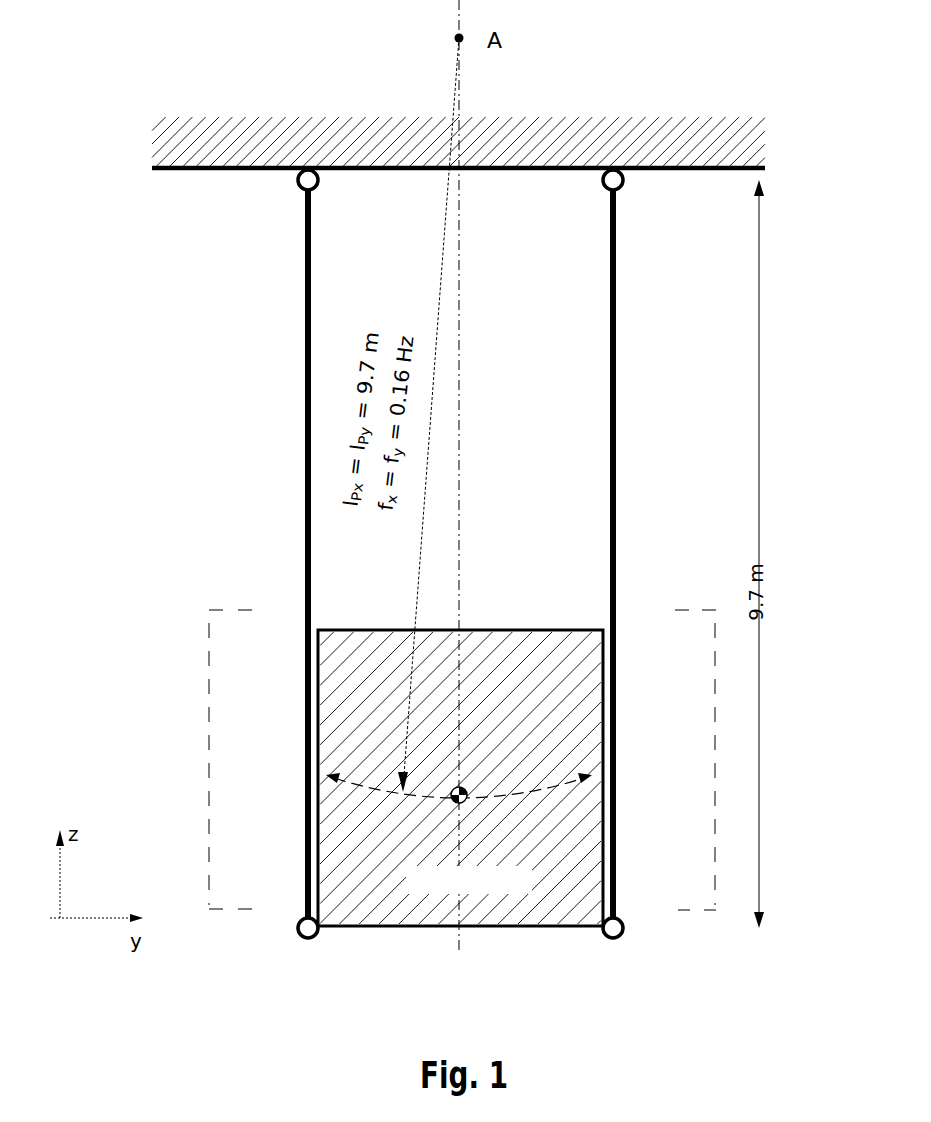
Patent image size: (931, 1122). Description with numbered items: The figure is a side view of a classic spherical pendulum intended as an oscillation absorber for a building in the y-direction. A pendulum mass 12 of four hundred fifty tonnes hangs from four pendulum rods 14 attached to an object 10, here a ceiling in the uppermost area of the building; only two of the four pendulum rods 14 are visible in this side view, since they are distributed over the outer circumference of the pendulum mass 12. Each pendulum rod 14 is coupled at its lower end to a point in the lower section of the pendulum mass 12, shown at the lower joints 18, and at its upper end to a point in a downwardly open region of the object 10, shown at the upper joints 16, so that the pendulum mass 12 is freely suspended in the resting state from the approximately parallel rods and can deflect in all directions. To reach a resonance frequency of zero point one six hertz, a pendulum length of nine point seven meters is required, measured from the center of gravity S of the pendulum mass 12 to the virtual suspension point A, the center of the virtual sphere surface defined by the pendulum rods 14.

The object 10 is at (722, 128).
The pendulum mass 12 is at (553, 624).
The pendulum rods 14 is at (304, 388).
The upper pivot joint 16 is at (292, 192).
The lower pivot joint 18 is at (292, 941).